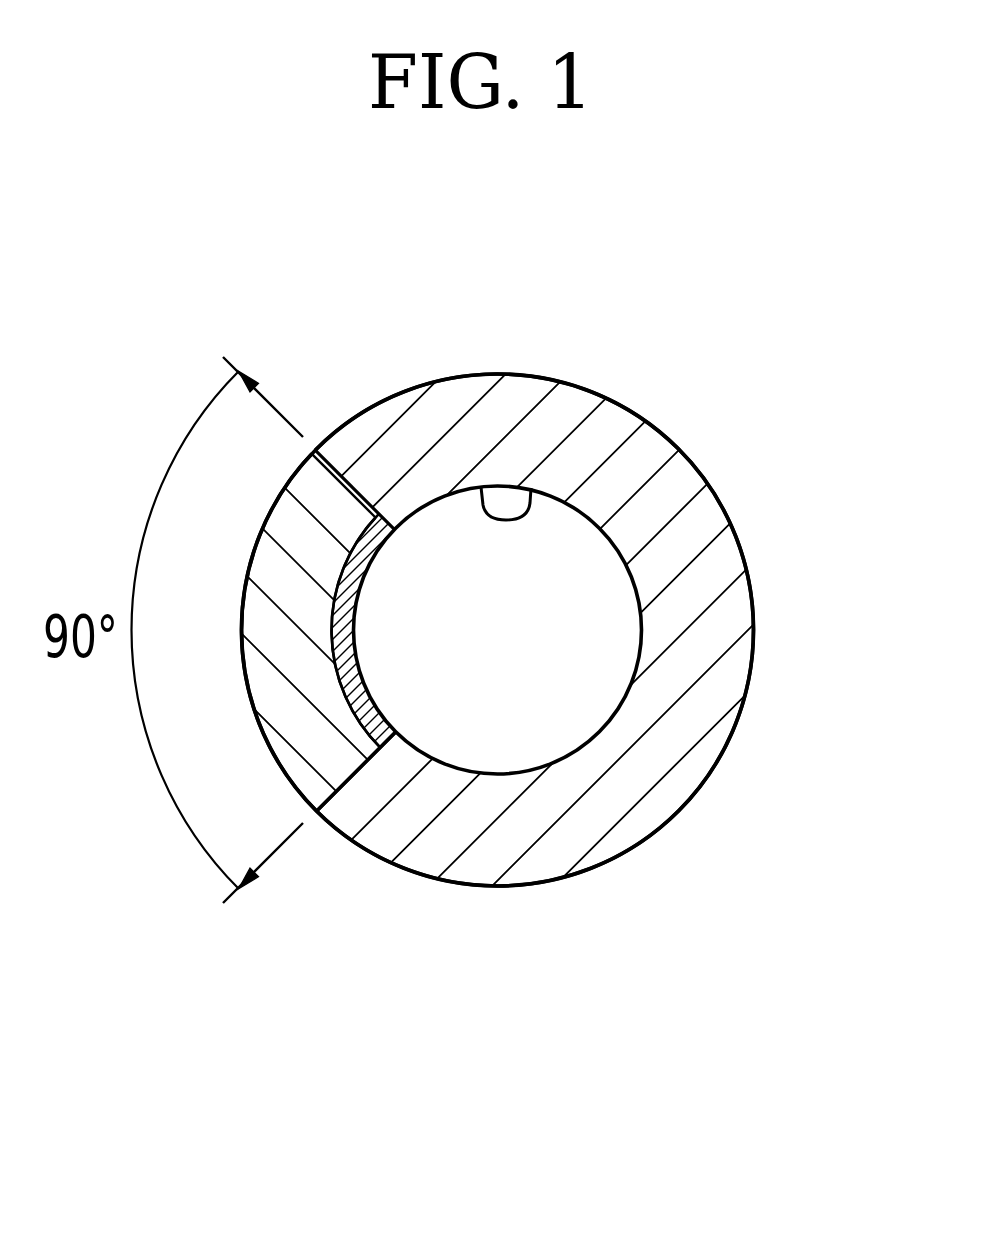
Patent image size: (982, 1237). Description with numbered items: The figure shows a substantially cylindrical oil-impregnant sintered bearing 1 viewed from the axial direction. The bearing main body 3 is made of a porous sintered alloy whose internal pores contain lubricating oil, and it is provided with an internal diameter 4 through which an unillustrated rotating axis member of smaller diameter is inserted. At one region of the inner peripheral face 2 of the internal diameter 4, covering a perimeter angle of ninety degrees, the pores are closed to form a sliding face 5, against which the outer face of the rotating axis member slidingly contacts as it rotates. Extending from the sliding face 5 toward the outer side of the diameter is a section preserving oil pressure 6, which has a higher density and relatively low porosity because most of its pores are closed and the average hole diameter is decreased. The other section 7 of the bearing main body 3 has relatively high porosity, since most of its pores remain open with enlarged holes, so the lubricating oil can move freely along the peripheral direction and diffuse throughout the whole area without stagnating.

The oil-impregnant sintered bearing 1 is at (738, 407).
The inner peripheral face 2 is at (518, 486).
The bearing main body 3 is at (707, 633).
The internal diameter 4 is at (582, 712).
The sliding face 5 is at (365, 688).
The section preserving oil pressure 6 is at (278, 688).
The other section 7 is at (500, 847).